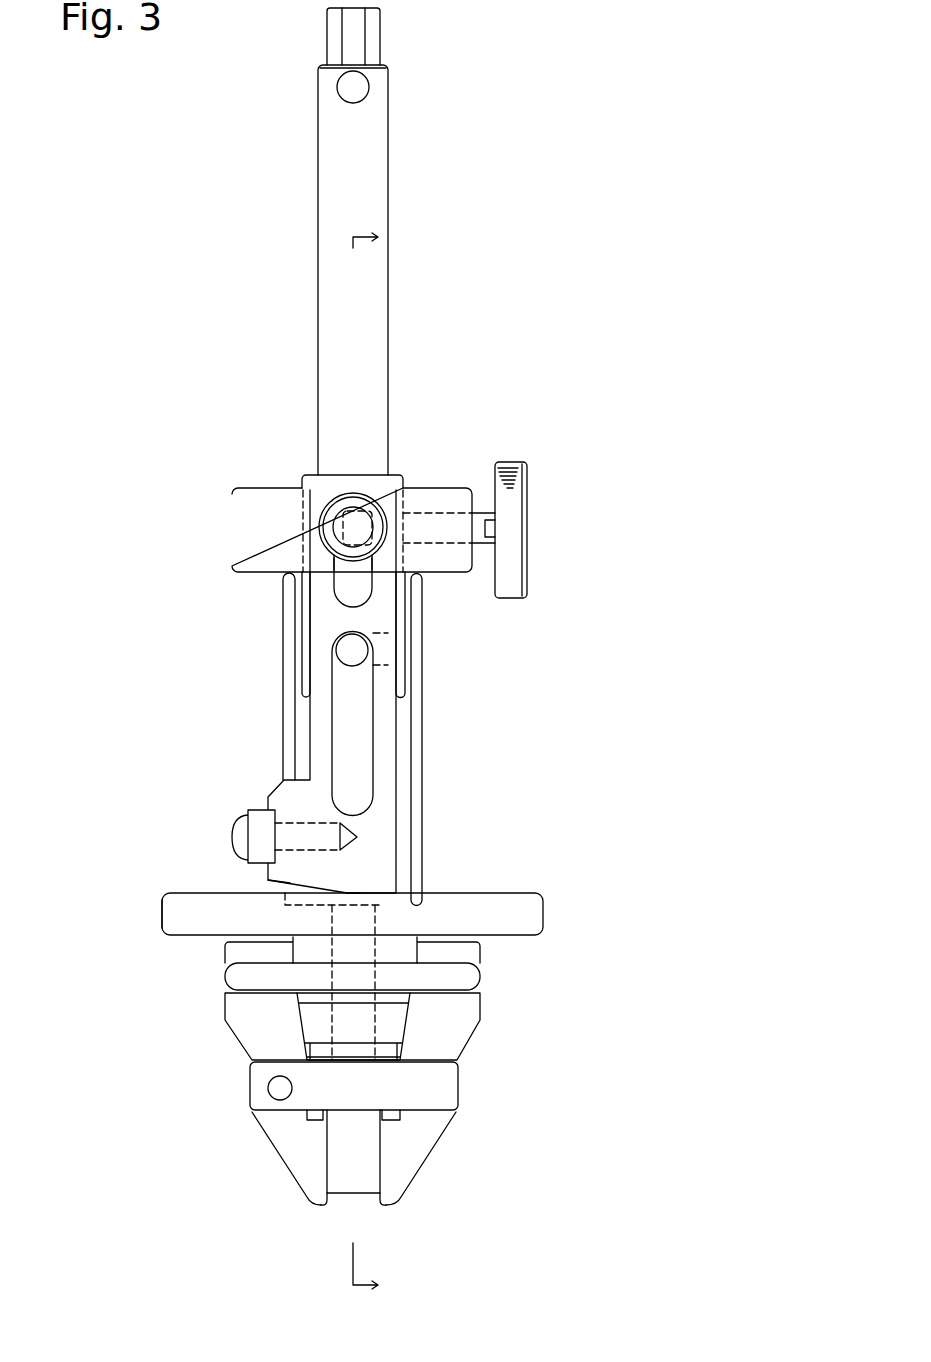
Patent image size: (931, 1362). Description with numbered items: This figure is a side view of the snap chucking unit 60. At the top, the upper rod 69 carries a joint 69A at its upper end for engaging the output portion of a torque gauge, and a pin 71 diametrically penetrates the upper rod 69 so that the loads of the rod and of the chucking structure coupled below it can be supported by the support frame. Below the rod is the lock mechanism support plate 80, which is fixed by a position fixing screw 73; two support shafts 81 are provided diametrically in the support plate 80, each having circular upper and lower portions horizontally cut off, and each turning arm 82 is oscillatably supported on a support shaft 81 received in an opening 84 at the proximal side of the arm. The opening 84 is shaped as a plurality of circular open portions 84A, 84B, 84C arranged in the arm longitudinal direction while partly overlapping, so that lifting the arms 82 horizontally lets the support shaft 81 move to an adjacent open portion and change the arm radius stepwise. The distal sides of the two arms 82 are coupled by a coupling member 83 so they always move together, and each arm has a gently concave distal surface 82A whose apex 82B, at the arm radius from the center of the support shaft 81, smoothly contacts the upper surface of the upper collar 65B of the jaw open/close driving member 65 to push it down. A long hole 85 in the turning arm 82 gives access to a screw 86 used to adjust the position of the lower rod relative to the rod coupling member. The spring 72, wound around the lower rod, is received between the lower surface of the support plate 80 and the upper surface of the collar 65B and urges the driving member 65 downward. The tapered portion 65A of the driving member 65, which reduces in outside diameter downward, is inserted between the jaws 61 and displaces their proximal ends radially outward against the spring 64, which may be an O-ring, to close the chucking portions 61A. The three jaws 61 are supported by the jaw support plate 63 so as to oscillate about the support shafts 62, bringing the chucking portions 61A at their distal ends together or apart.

The snap chucking unit 60 is at (524, 400).
The upper rod 69 is at (388, 215).
The joint 69A is at (380, 30).
The pin 71 is at (337, 82).
The spring 72 is at (423, 695).
The position fixing screw 73 is at (528, 483).
The lock mechanism support plate 80 is at (258, 487).
The support shaft 81 is at (365, 519).
The turning arm 82 is at (397, 808).
The distal surface 82A is at (268, 882).
The apex 82B is at (350, 893).
The coupling member 83 is at (263, 812).
The opening 84 is at (330, 584).
The circular open portion 84A is at (337, 526).
The circular open portion 84B is at (337, 563).
The circular open portion 84C is at (338, 597).
The long hole 85 is at (375, 692).
The screw 86 is at (358, 652).
The jaw open/close driving member 65 is at (545, 895).
The tapered portion 65A is at (315, 1033).
The upper collar 65B is at (160, 905).
The spring 64 is at (482, 976).
The jaw 61 is at (483, 1018).
The chucking portion 61A is at (330, 1207).
The support shaft 62 is at (266, 1082).
The jaw support plate 63 is at (460, 1083).